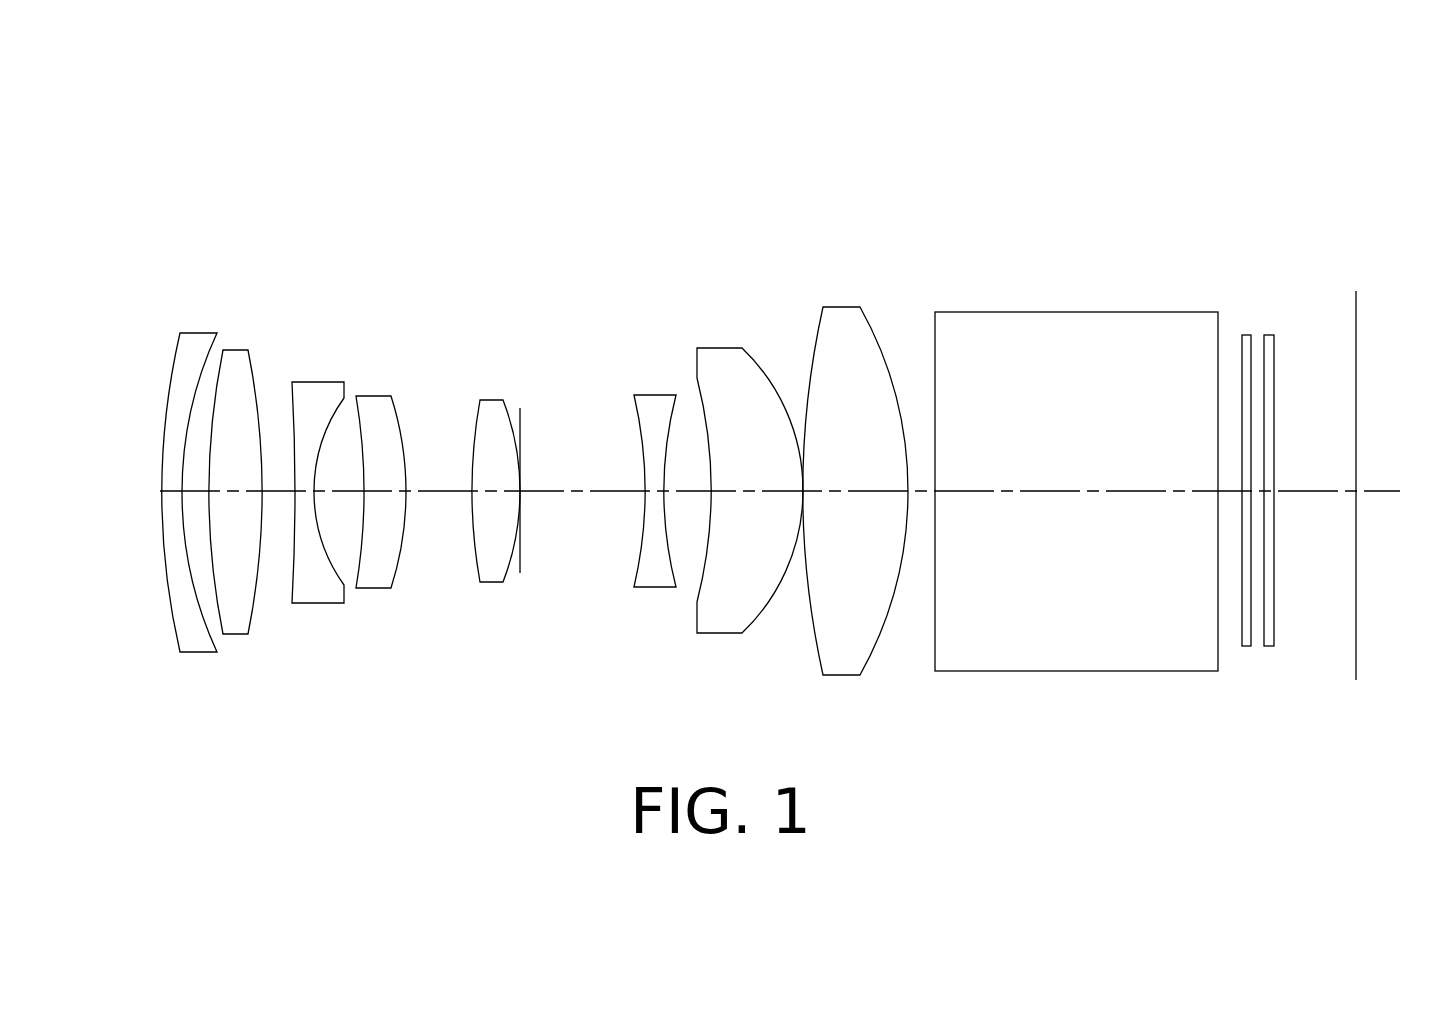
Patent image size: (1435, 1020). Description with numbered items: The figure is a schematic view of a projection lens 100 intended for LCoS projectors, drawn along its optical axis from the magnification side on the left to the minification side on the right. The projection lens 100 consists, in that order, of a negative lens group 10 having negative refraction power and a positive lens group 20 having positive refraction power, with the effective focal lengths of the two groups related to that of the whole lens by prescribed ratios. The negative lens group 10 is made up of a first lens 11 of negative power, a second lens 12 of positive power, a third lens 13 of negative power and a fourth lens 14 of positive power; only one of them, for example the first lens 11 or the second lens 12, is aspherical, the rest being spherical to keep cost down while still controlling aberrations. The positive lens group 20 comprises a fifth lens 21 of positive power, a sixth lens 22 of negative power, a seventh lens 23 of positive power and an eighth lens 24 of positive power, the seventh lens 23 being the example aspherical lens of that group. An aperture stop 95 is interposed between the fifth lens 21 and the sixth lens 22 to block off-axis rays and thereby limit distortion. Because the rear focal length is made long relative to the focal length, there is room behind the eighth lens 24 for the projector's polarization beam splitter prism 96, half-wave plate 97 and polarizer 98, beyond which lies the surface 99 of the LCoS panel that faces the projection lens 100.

The projection lens 100 is at (367, 148).
The negative lens group 10 is at (382, 225).
The positive lens group 20 is at (853, 227).
The first lens 11 is at (182, 370).
The second lens 12 is at (240, 368).
The third lens 13 is at (323, 395).
The fourth lens 14 is at (378, 408).
The fifth lens 21 is at (493, 418).
The sixth lens 22 is at (648, 413).
The seventh lens 23 is at (730, 383).
The eighth lens 24 is at (847, 353).
The aperture stop 95 is at (520, 545).
The polarization beam splitter prism 96 is at (1065, 378).
The half-wave plate 97 is at (1246, 340).
The polarizer 98 is at (1268, 342).
The surface 99 is at (1357, 331).